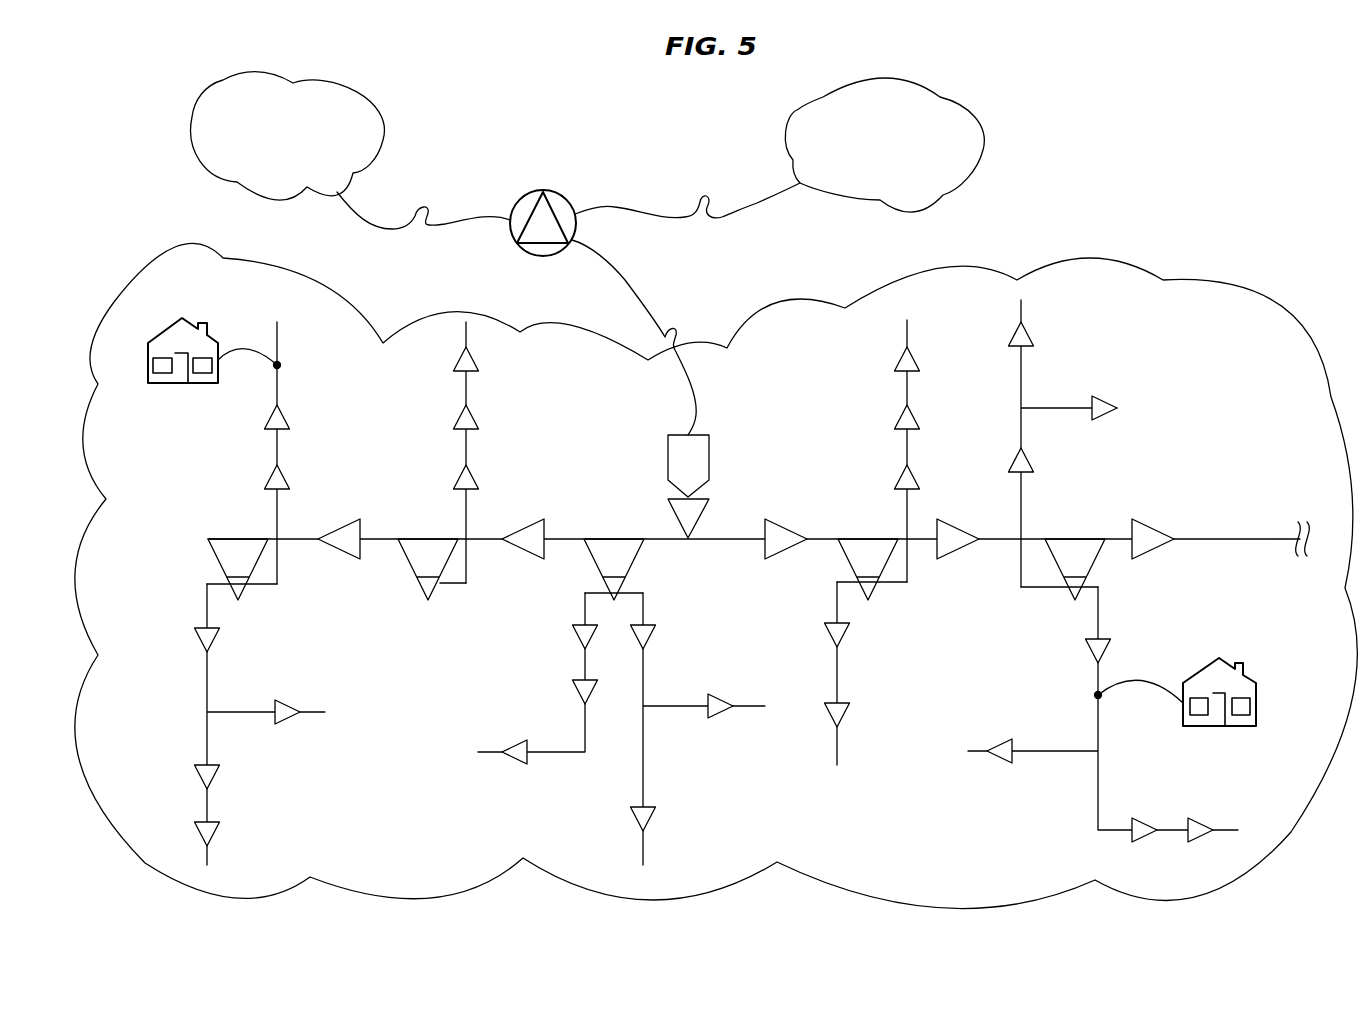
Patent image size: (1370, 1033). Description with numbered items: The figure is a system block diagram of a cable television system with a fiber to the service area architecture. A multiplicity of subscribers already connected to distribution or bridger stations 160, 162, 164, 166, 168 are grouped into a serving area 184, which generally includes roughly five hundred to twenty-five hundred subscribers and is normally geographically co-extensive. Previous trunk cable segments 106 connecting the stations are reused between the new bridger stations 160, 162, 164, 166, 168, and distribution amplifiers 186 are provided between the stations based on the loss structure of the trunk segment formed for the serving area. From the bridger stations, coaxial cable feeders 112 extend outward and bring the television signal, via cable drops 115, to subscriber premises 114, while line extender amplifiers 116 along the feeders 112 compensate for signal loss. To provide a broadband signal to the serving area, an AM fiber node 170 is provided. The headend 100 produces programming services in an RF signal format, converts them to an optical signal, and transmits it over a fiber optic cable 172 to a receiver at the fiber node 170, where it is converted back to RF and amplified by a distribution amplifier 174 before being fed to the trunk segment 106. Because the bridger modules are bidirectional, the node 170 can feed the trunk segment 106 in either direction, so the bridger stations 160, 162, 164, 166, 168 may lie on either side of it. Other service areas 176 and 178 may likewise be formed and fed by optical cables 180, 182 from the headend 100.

The headend 100 is at (523, 191).
The trunk cable 106 is at (742, 540).
The coaxial cable feeders 112 is at (277, 452).
The subscriber premises 114 is at (167, 329).
The cable drops 115 is at (240, 353).
The line extender amplifiers 116 is at (295, 722).
The bridger station 160 is at (232, 539).
The bridger station 162 is at (422, 539).
The bridger station 164 is at (606, 539).
The bridger station 166 is at (858, 539).
The bridger station 168 is at (1069, 539).
The AM fiber node 170 is at (668, 450).
The fiber optic cable 172 is at (617, 263).
The distribution amplifier 174 is at (668, 515).
The service area 176 is at (301, 155).
The service area 178 is at (913, 162).
The optical cable 180 is at (388, 231).
The optical cable 182 is at (750, 207).
The serving area 184 is at (1257, 387).
The distribution amplifiers 186 is at (322, 522).